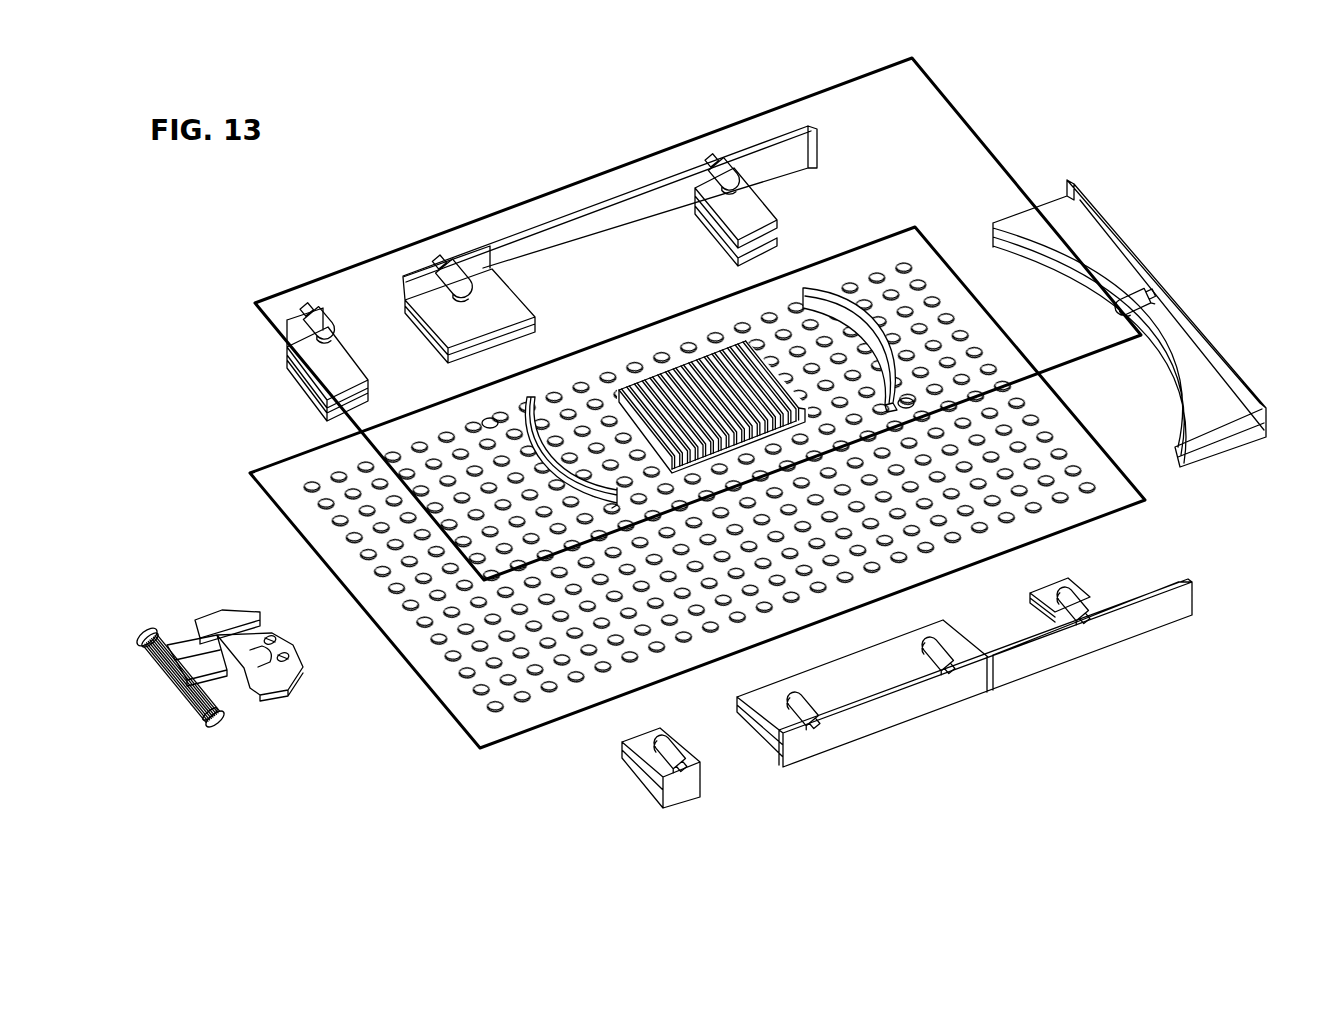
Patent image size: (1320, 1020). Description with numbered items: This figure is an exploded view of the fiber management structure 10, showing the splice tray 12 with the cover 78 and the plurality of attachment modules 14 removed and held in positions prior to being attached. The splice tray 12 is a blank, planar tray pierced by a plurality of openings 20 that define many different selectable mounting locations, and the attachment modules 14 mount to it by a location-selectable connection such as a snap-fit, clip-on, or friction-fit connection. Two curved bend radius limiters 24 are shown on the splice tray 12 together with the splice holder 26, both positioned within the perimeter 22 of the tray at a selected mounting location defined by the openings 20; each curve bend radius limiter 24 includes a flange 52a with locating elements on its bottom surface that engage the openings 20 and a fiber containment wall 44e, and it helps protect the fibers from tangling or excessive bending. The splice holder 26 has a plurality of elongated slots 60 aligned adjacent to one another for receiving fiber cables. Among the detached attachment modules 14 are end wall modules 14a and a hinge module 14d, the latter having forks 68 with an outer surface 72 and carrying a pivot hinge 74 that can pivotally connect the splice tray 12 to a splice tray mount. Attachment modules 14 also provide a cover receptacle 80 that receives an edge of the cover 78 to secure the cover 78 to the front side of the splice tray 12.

The fiber management structure 10 is at (1205, 145).
The splice tray 12 is at (540, 726).
The attachment modules 14 is at (1213, 307).
The end wall modules 14a is at (698, 804).
The hinge module 14d is at (213, 722).
The plurality of openings 20 is at (1094, 491).
The perimeter 22 is at (268, 478).
The curve bend radius limiter 24 is at (865, 305).
The splice holder 26 is at (753, 372).
The fiber containment wall 44e is at (490, 420).
The flange 52a is at (533, 425).
The elongated slots 60 is at (733, 372).
The forks 68 is at (294, 706).
The outer surface 72 is at (235, 612).
The pivot hinge 74 is at (148, 636).
The cover 78 is at (953, 135).
The cover receptacle 80 is at (681, 760).